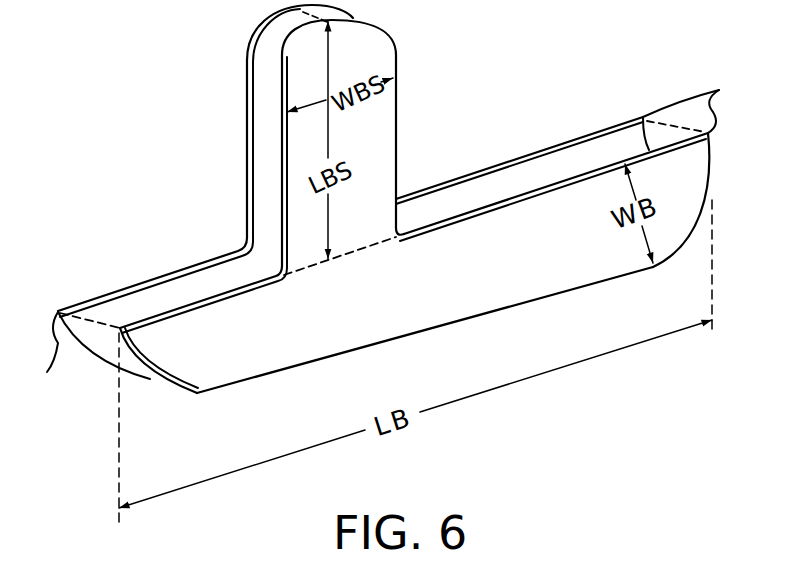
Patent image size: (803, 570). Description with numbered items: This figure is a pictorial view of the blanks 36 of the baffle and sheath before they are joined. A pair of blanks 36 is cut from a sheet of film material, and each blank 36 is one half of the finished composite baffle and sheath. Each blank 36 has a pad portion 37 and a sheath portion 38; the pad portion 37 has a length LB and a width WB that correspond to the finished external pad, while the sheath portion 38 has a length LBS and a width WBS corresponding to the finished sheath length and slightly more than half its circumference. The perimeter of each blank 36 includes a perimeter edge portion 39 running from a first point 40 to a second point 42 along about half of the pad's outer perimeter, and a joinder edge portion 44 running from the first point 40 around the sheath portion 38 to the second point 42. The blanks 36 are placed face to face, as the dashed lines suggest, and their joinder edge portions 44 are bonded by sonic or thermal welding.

The blank 36 is at (147, 313).
The pad portion 37 is at (466, 288).
The sheath portion 38 is at (368, 141).
The perimeter edge portion 39 is at (347, 353).
The first point 40 is at (120, 328).
The second point 42 is at (712, 92).
The joinder edge portion 44 is at (282, 91).